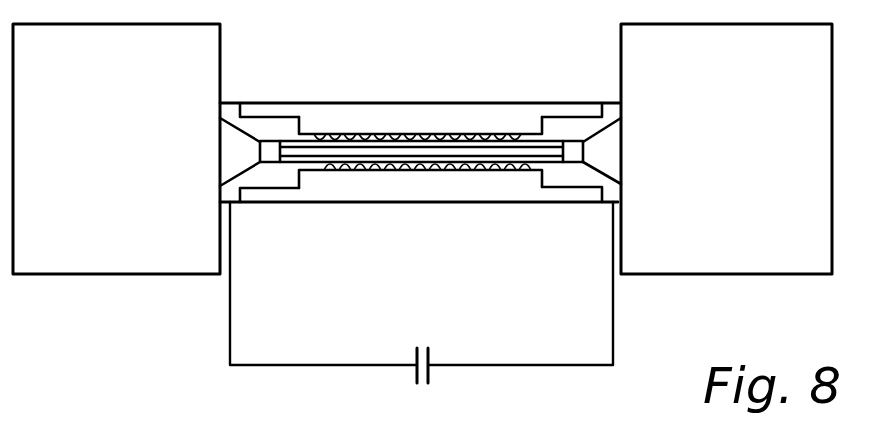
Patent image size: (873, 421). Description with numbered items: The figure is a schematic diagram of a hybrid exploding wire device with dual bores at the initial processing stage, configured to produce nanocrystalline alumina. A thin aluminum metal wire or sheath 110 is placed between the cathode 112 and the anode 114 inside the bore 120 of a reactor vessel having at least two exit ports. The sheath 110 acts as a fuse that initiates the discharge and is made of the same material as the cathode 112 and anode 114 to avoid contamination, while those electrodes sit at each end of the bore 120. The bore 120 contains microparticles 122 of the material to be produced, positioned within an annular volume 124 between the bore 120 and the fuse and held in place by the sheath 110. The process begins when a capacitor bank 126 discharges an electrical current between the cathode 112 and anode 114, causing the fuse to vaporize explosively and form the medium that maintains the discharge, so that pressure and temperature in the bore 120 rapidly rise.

The sheath 110 is at (296, 120).
The cathode 112 is at (233, 103).
The anode 114 is at (610, 102).
The bore 120 is at (428, 107).
The microparticles 122 is at (492, 168).
The annular volume 124 is at (392, 168).
The capacitor bank 126 is at (414, 362).